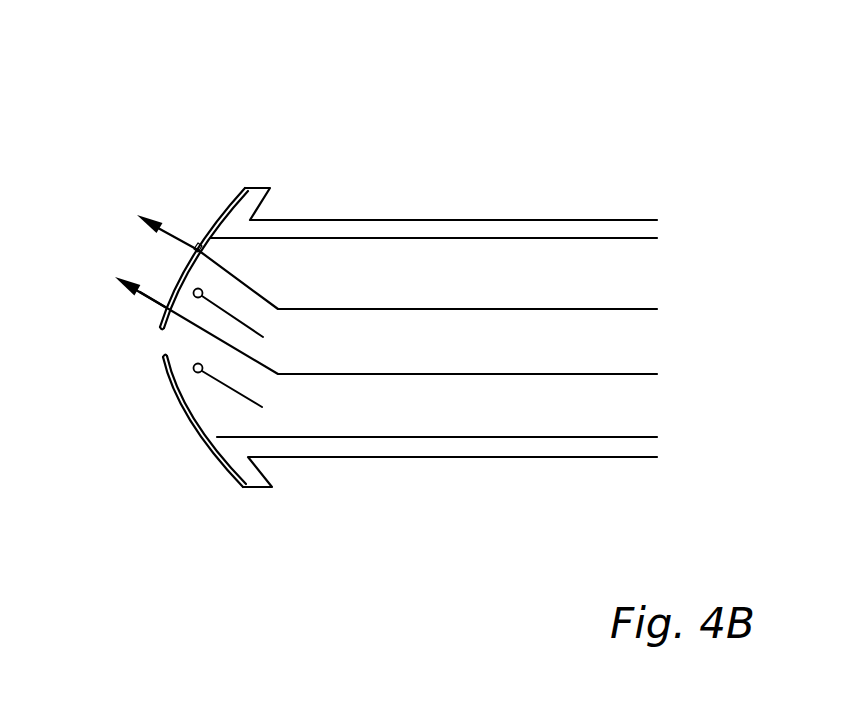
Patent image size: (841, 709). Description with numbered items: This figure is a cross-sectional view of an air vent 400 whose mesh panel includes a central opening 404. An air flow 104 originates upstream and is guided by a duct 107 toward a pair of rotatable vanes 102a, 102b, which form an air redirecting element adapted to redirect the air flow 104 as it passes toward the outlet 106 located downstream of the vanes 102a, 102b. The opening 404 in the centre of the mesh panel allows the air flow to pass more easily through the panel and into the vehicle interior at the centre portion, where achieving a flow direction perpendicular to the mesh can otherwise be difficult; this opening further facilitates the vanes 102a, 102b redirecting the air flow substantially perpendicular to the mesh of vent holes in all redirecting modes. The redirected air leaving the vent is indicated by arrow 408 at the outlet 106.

The air vent 400 is at (254, 111).
The duct 107 is at (360, 457).
The air flow 104 is at (458, 309).
The rotatable vane 102a is at (265, 338).
The rotatable vane 102b is at (262, 407).
The emitted beam direction 408 is at (162, 265).
The outlet 106 is at (176, 341).
The opening 404 is at (134, 356).